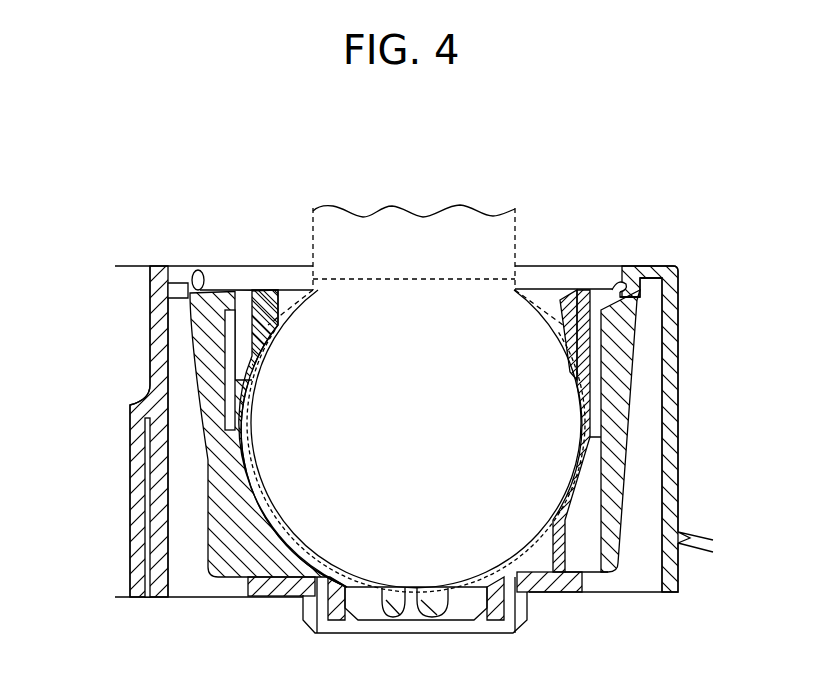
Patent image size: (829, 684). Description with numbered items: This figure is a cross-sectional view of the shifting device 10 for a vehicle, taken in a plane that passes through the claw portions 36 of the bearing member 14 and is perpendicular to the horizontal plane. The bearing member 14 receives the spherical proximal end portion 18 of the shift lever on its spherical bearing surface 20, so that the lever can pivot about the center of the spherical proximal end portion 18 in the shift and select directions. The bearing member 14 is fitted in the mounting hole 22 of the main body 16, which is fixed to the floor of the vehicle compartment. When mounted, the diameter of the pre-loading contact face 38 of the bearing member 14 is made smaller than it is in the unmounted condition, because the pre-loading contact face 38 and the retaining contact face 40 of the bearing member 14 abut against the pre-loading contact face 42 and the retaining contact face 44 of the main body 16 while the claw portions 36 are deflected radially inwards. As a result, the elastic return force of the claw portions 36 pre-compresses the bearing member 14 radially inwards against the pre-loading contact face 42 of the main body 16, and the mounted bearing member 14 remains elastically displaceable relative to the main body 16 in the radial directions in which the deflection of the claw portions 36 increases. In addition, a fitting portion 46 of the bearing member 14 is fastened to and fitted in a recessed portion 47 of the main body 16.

The shifting device 10 is at (238, 165).
The bearing member 14 is at (632, 510).
The main body 16 is at (106, 489).
The spherical proximal end portion 18 is at (318, 343).
The spherical bearing surface 20 is at (548, 366).
The mounting hole 22 is at (170, 533).
The claw portions 36 is at (180, 360).
The pre-loading contact face 38 is at (622, 284).
The retaining contact face 40 is at (652, 303).
The pre-loading contact face 42 is at (199, 290).
The retaining contact face 44 is at (168, 292).
The fitting portion 46 is at (503, 615).
The recessed portion 47 is at (310, 623).